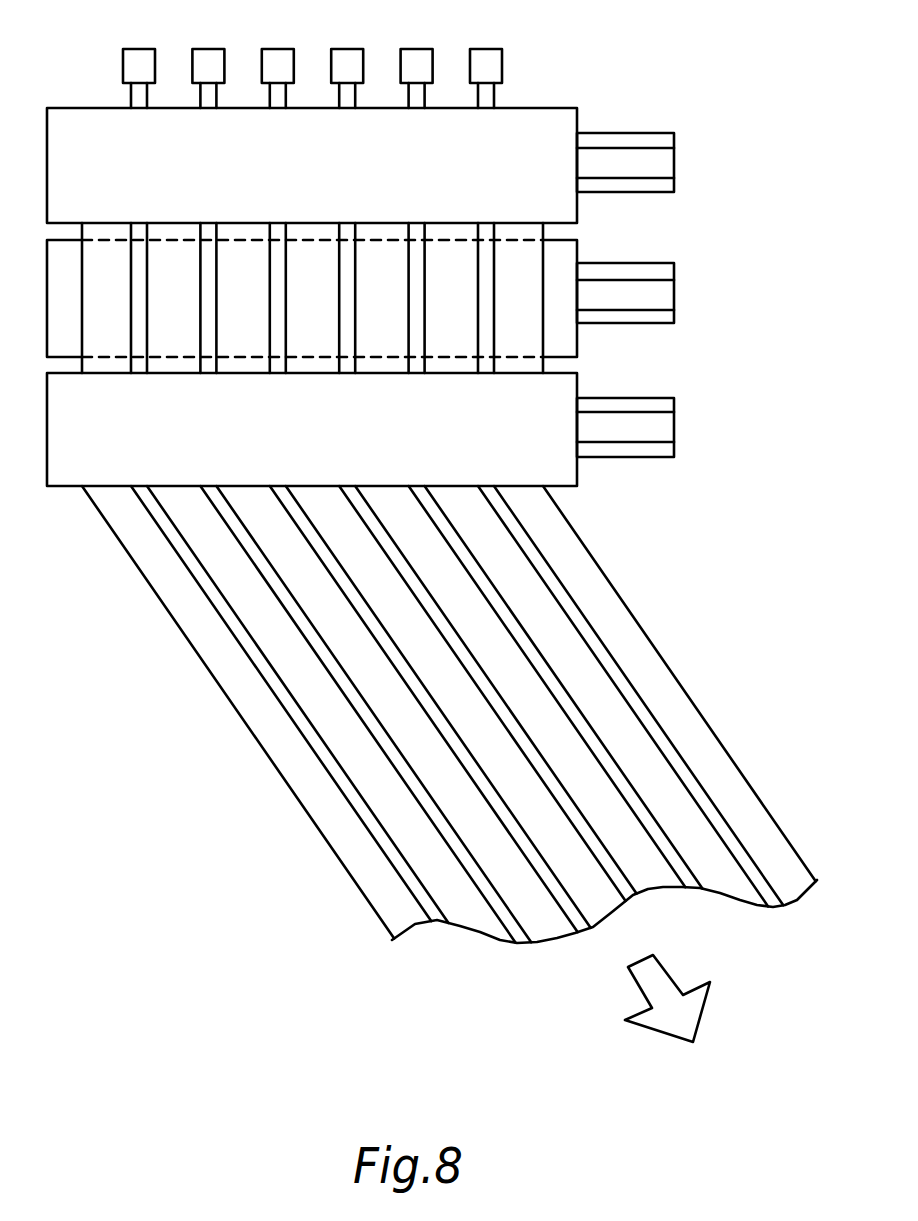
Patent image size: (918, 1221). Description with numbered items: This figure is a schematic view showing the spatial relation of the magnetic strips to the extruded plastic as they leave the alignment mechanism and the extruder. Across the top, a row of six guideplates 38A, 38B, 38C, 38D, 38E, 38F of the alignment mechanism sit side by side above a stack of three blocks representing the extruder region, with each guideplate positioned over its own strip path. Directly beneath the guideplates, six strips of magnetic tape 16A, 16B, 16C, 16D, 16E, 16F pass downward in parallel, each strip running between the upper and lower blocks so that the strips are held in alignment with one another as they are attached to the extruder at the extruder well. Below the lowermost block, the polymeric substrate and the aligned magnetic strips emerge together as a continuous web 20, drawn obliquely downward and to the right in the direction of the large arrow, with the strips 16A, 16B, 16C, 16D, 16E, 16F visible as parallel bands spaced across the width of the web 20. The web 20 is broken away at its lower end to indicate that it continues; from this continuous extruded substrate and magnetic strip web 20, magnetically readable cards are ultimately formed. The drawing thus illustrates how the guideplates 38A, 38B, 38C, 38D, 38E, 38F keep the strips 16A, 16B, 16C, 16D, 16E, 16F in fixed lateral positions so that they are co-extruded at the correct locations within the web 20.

The guideplate 38A is at (138, 49).
The guideplate 38B is at (207, 49).
The guideplate 38C is at (277, 49).
The actuator 38D is at (346, 49).
The guideplate 38E is at (416, 49).
The guideplate 38F is at (485, 49).
The magnetic strip 16A is at (140, 223).
The magnetic strip 16B is at (209, 223).
The magnetic strip 16C is at (279, 223).
The roller 16D is at (348, 223).
The roller 16E is at (418, 223).
The roller 16F is at (487, 223).
The continuous web 20 is at (327, 812).